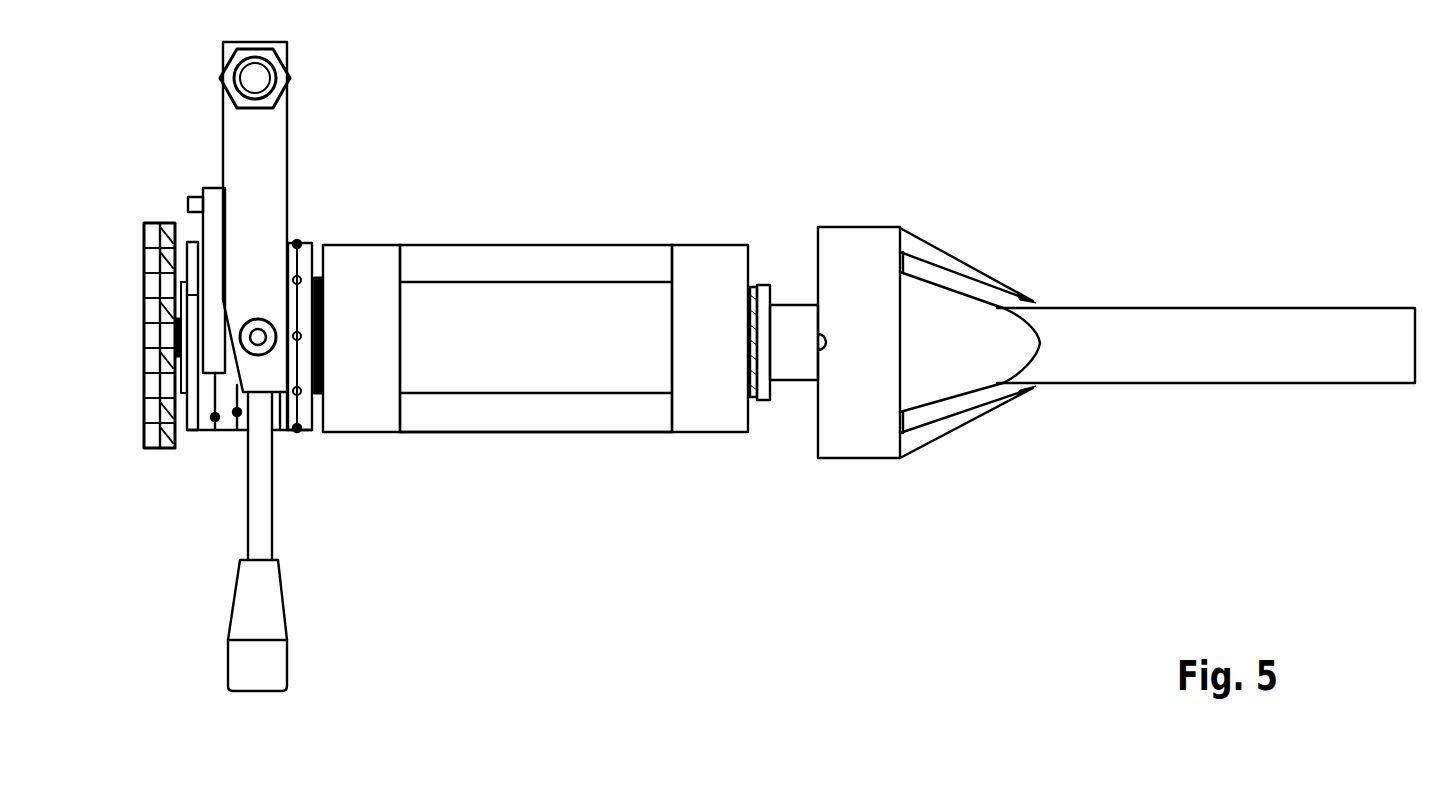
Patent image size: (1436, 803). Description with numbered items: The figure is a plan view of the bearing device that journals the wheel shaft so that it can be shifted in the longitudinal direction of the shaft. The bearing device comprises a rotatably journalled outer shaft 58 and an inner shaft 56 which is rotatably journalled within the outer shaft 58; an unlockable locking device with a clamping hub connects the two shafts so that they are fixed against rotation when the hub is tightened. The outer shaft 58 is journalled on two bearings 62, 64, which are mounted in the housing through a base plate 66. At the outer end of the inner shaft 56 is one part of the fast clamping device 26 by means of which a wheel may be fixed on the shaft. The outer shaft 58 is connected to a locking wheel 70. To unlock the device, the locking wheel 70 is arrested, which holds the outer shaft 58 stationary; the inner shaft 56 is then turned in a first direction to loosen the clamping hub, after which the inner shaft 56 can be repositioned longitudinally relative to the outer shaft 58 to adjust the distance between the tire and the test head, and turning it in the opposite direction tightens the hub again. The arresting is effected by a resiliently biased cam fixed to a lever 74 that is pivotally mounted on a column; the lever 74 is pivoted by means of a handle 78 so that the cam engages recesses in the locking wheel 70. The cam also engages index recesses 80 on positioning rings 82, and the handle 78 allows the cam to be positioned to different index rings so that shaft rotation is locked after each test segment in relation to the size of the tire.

The fast clamping device 26 is at (915, 242).
The inner shaft 56 is at (1120, 318).
The outer shaft 58 is at (515, 297).
The bearing 62 is at (363, 257).
The bearing 64 is at (710, 258).
The base plate 66 is at (492, 418).
The locking wheel 70 is at (143, 318).
The lever 74 is at (268, 130).
The handle 78 is at (268, 590).
The index recesses 80 is at (297, 243).
The positioning rings 82 is at (290, 425).